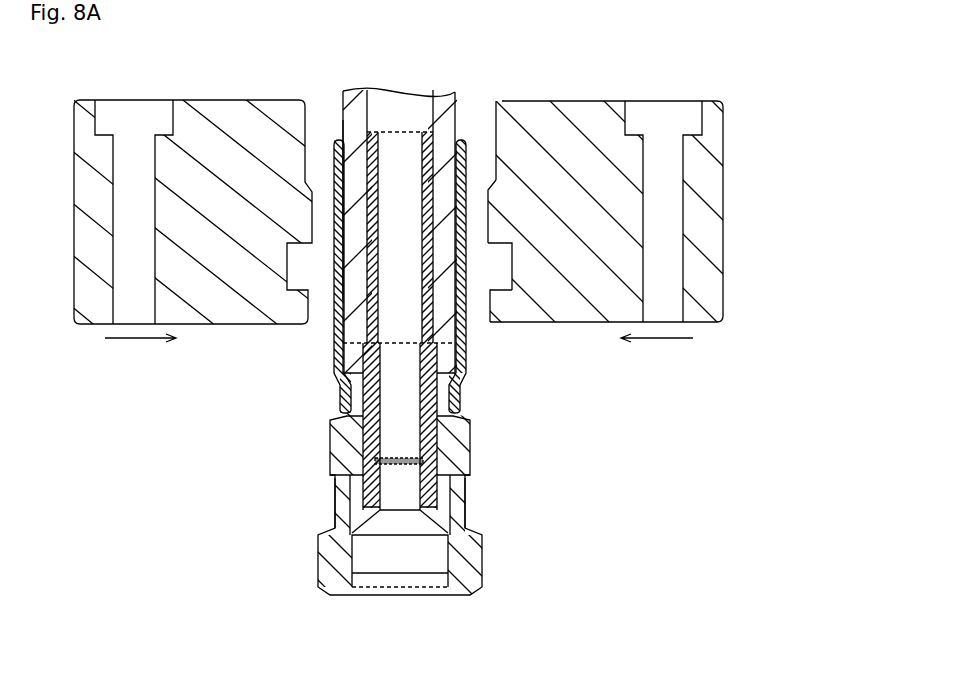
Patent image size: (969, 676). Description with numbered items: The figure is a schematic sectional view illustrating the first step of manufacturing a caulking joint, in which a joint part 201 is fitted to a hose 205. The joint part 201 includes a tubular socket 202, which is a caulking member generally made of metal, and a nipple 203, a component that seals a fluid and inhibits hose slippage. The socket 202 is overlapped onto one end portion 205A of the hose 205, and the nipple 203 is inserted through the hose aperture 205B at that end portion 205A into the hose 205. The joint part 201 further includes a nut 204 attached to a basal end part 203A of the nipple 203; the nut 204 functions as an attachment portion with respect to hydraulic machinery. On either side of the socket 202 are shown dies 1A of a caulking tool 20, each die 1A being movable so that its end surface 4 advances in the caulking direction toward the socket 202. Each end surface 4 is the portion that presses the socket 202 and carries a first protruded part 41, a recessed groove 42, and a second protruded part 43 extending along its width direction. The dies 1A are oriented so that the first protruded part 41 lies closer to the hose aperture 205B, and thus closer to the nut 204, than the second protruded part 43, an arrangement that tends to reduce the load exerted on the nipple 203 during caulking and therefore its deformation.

The caulking die 1A is at (154, 87).
The caulking tool 20 is at (686, 87).
The end surface 4 is at (496, 139).
The first protruded part 41 is at (485, 307).
The recessed groove 42 is at (497, 272).
The second protruded part 43 is at (503, 243).
The joint part 201 is at (205, 352).
The socket 202 is at (334, 250).
The nipple 203 is at (365, 345).
The basal end part 203A is at (337, 503).
The nut 204 is at (322, 547).
The hose 205 is at (361, 78).
The one end portion 205A is at (355, 218).
The hose aperture 205B is at (410, 347).